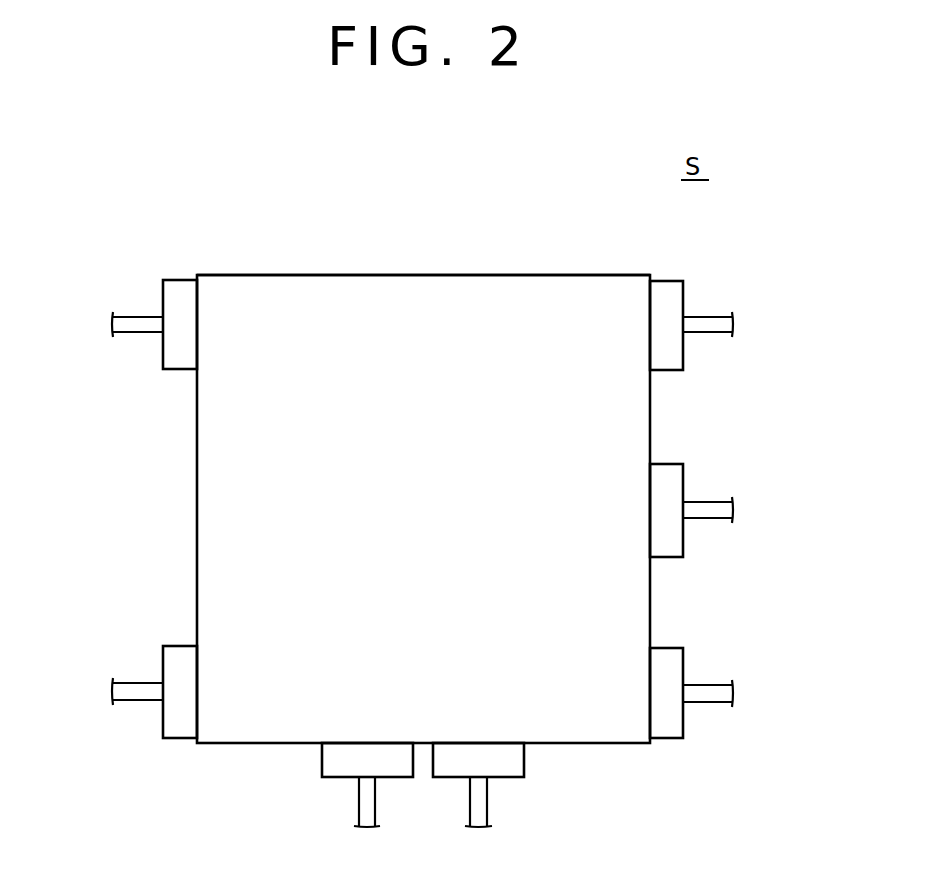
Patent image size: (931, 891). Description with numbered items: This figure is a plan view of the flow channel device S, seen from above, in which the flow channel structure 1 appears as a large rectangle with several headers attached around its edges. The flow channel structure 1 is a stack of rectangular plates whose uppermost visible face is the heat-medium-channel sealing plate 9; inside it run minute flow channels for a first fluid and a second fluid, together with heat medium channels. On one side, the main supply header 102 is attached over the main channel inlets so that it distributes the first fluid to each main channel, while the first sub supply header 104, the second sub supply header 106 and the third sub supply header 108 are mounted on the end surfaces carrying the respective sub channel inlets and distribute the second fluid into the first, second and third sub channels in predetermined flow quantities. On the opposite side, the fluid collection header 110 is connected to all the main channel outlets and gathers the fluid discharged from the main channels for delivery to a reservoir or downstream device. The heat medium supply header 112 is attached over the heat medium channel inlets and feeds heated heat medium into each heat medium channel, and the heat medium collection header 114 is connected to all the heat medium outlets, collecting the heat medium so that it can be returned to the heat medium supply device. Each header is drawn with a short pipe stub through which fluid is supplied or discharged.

The flow channel structure 1 is at (436, 271).
The heat-medium-channel sealing plate 9 is at (321, 296).
The main supply header 102 is at (683, 667).
The first sub supply header 104 is at (526, 757).
The second sub supply header 106 is at (322, 757).
The third sub supply header 108 is at (683, 483).
The fluid collection header 110 is at (163, 298).
The heat medium supply header 112 is at (163, 665).
The heat medium collection header 114 is at (683, 300).